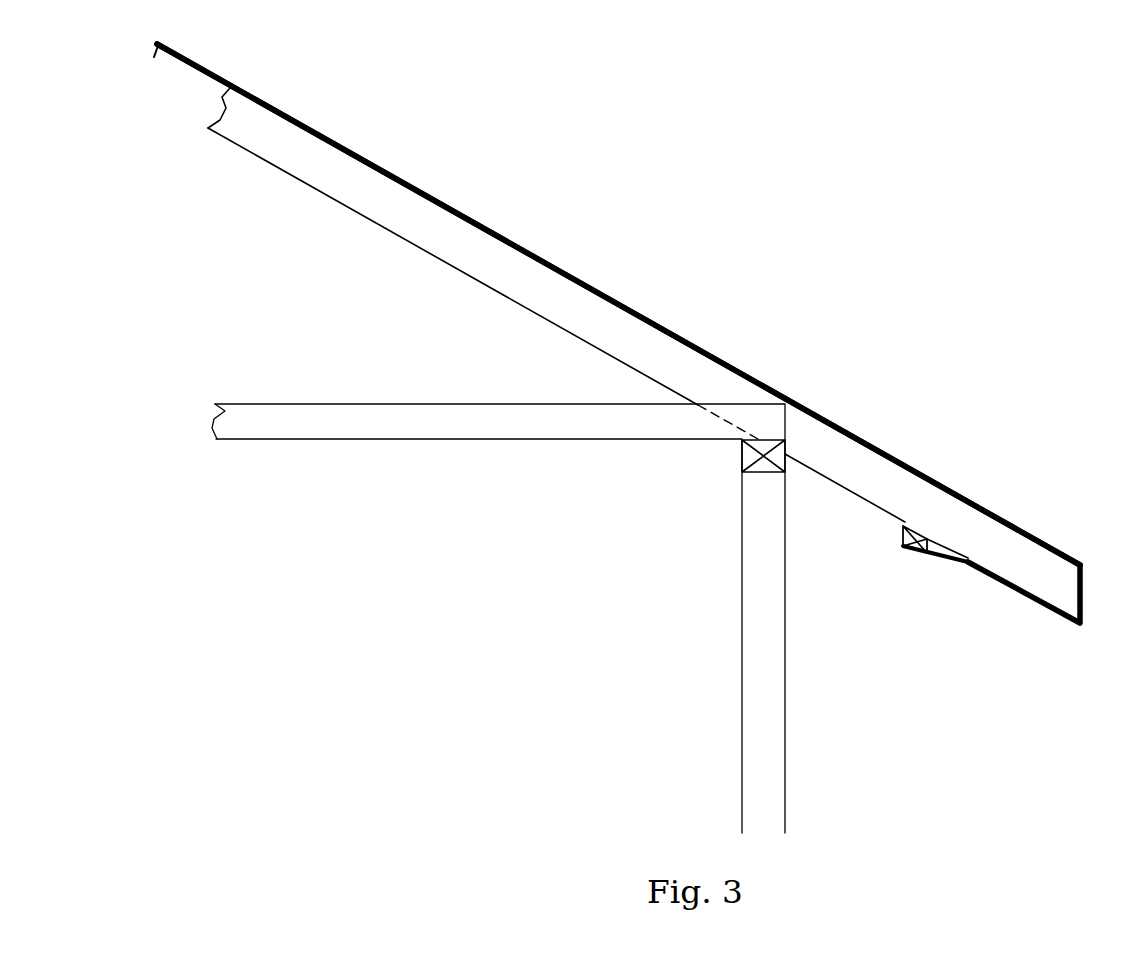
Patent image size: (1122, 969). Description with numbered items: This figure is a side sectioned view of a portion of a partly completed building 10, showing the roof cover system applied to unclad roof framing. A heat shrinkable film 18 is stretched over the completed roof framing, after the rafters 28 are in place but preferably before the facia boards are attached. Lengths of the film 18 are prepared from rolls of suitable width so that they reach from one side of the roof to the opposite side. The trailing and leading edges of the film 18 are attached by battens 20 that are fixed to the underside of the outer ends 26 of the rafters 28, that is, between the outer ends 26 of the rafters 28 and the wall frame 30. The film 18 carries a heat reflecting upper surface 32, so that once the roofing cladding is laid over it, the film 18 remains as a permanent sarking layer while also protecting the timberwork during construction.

The building structure assembly 10 is at (784, 144).
The heat shrinkable film 18 is at (712, 355).
The battens 20 is at (912, 552).
The outer ends 26 is at (1008, 548).
The rafters 28 is at (458, 252).
The wall frame 30 is at (768, 702).
The heat reflecting upper surface 32 is at (620, 287).